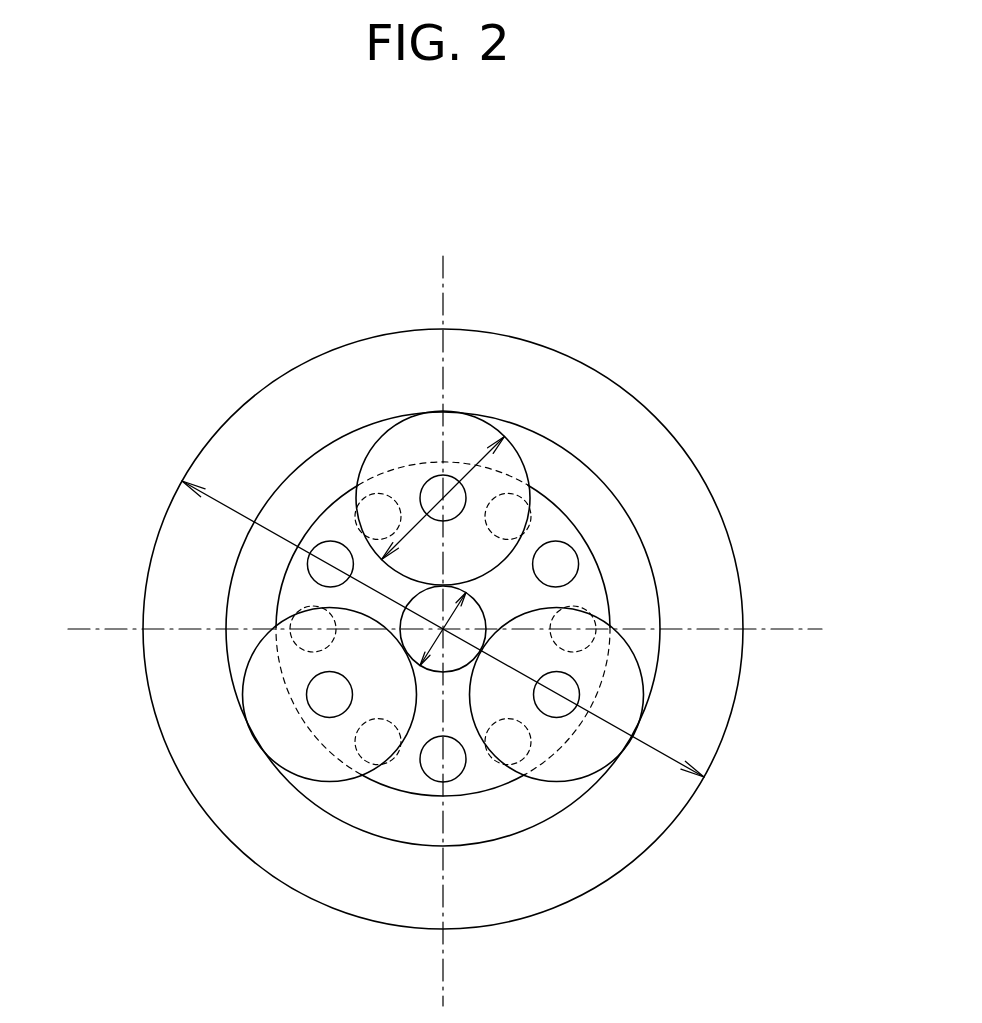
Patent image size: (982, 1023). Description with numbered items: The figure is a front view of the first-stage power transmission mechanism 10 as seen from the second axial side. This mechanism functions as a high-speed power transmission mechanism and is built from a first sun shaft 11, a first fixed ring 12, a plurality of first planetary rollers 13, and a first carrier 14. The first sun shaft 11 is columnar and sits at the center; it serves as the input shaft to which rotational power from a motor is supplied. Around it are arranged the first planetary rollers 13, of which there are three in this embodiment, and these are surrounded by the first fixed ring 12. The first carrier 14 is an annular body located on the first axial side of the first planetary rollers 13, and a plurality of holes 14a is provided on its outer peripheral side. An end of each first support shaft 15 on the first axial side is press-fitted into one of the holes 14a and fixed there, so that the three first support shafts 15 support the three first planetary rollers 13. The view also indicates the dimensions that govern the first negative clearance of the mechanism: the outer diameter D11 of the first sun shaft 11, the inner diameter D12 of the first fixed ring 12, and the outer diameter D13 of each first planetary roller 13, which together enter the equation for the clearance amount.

The first-stage power transmission mechanism 10 is at (268, 224).
The first sun shaft 11 is at (453, 645).
The first fixed ring 12 is at (660, 447).
The first planetary roller 13 is at (407, 447).
The first carrier 14 is at (406, 777).
The hole 14a is at (530, 518).
The first support shaft 15 is at (428, 498).
The outer diameter of the first sun shaft D11 is at (443, 629).
The inner diameter of the first fixed ring D12 is at (226, 503).
The outer diameter of the first planetary roller D13 is at (464, 476).